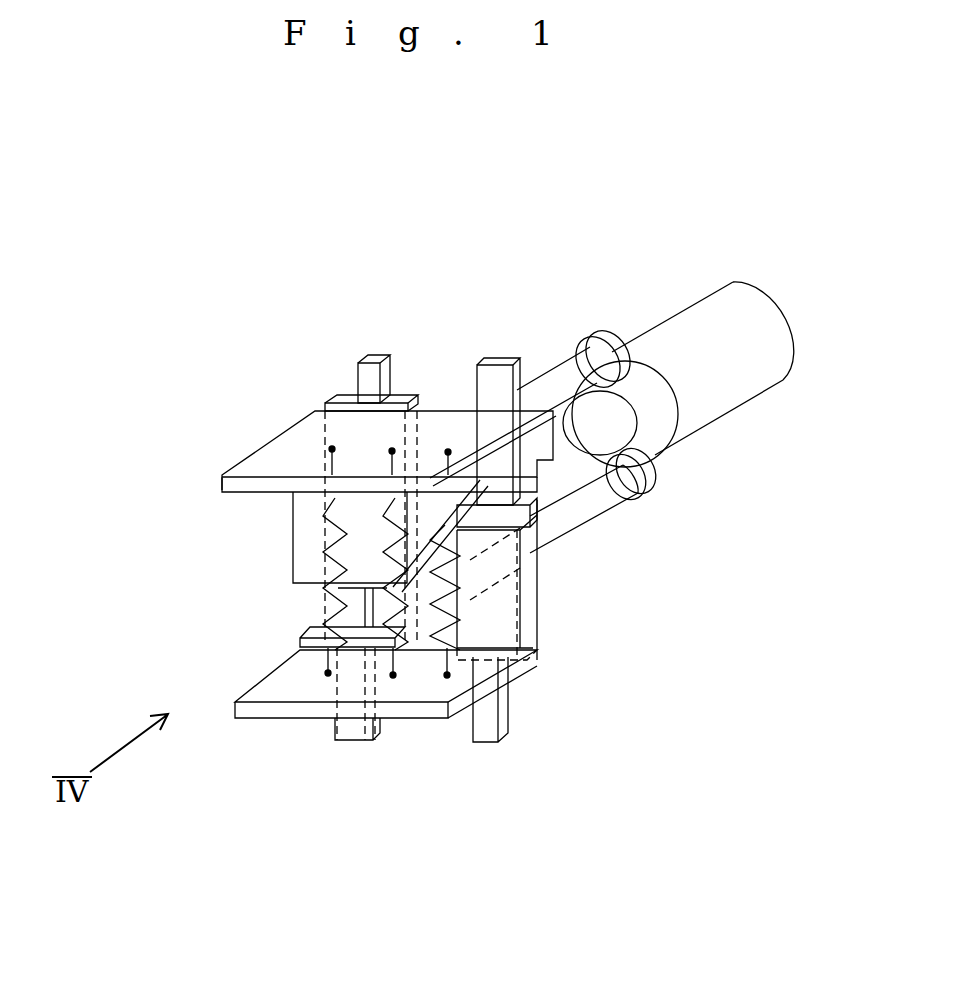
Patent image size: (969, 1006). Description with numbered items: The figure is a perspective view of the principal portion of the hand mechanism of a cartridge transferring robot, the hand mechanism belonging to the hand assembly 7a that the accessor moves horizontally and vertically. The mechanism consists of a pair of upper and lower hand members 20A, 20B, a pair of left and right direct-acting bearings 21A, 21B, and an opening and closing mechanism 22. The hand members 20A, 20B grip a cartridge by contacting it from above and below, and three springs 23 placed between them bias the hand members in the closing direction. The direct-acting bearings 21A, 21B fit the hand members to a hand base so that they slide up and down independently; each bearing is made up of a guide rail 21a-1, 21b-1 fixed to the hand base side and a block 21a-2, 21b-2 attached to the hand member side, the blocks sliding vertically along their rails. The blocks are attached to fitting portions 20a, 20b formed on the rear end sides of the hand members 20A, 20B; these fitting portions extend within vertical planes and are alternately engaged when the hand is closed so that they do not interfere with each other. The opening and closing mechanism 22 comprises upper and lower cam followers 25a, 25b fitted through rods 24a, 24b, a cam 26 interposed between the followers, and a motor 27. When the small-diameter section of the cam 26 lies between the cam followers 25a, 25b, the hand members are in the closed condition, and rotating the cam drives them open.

The hand assembly 7a is at (207, 479).
The upper hand member 20A is at (255, 462).
The lower hand member 20B is at (412, 713).
The fitting portion of upper hand member 20a is at (300, 523).
The fitting portion of lower hand member 20b is at (507, 597).
The left direct-acting bearing 21A is at (327, 337).
The right direct-acting bearing 21B is at (570, 423).
The guide rail 21a-1 is at (380, 352).
The block (bearing) 21a-2 is at (330, 404).
The guide rail 21b-1 is at (492, 357).
The block (bearing) 21b-2 is at (525, 500).
The opening and closing mechanism 22 is at (708, 334).
The spring 23 is at (327, 607).
The rod 24a is at (547, 390).
The rod 24b is at (600, 493).
The upper cam follower 25a is at (603, 347).
The lower cam follower 25b is at (640, 483).
The cam 26 is at (617, 423).
The motor 27 is at (783, 340).